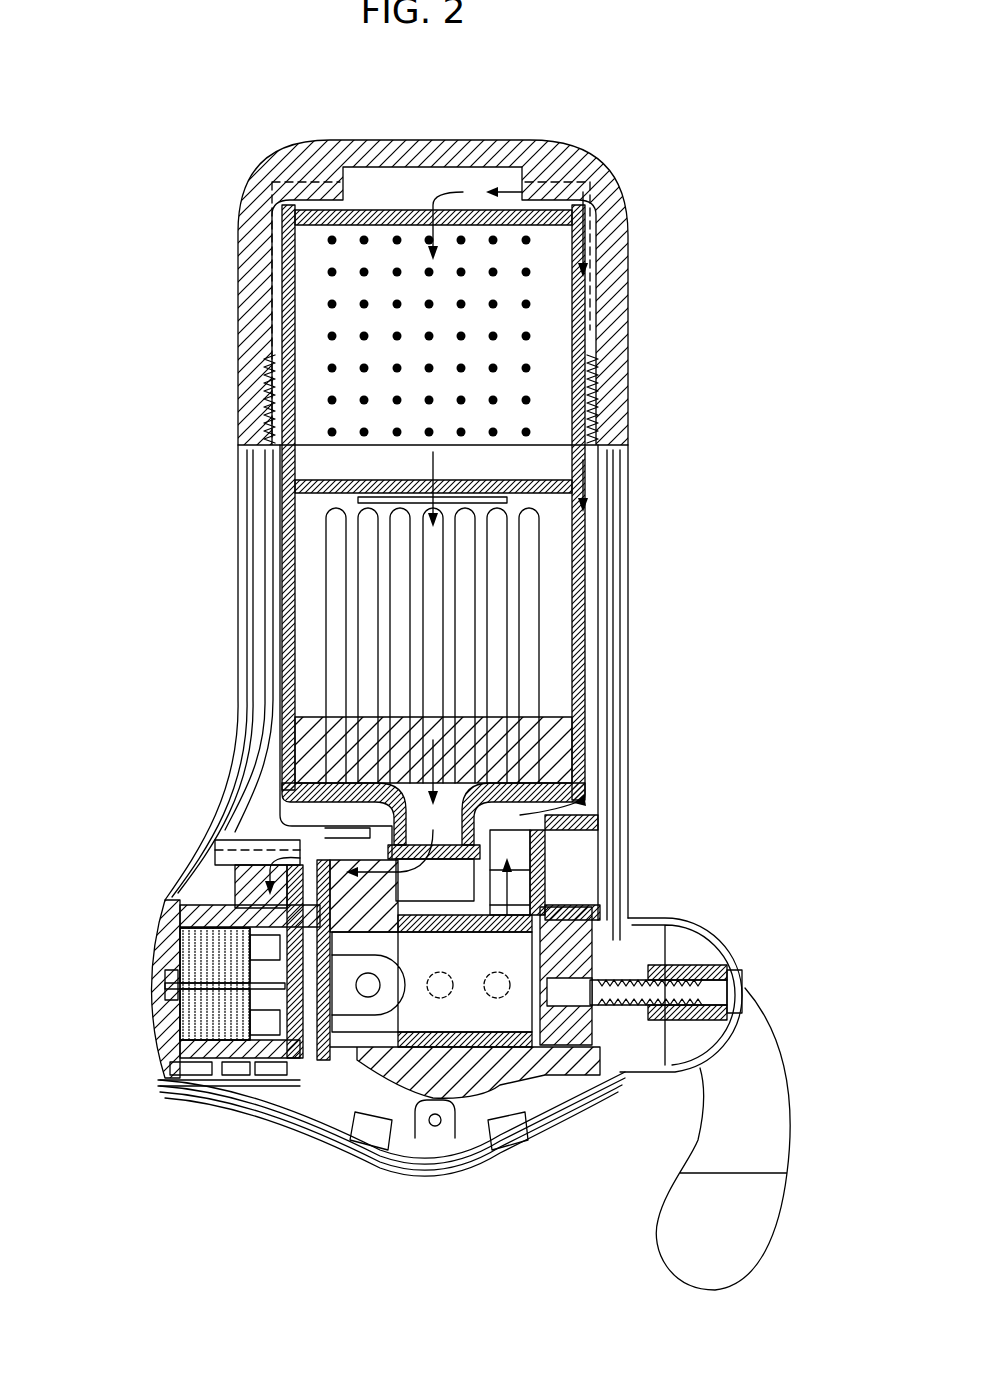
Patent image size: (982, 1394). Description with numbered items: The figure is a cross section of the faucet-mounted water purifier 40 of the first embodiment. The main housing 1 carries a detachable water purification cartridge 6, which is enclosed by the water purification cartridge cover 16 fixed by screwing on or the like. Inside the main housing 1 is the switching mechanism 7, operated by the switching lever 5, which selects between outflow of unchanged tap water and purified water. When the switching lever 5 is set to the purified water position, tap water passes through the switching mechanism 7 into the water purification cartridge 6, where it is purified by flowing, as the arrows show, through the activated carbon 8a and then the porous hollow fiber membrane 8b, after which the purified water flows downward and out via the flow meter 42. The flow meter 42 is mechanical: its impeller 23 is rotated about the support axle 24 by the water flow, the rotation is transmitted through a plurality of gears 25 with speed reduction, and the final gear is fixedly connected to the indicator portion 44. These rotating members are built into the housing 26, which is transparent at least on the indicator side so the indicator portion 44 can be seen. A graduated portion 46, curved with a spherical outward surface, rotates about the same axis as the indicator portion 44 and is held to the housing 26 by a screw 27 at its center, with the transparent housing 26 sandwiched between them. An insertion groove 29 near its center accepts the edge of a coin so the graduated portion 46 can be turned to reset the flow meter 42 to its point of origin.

The main housing 1 is at (600, 866).
The switching lever 5 is at (760, 1235).
The water purification cartridge 6 is at (577, 381).
The switching mechanism 7 is at (517, 1022).
The activated carbon 8a is at (566, 246).
The porous hollow fiber membrane 8b is at (520, 612).
The water purification cartridge cover 16 is at (618, 291).
The impeller 23 is at (263, 1072).
The support axle 24 is at (175, 1080).
The gears 25 is at (160, 930).
The housing 26 is at (215, 1052).
The screw 27 is at (165, 985).
The insertion groove 29 is at (165, 1000).
The water purifier 40 is at (682, 198).
The flow meter 42 is at (235, 878).
The indicator portion 44 is at (165, 960).
The graduated portion 46 is at (160, 1040).